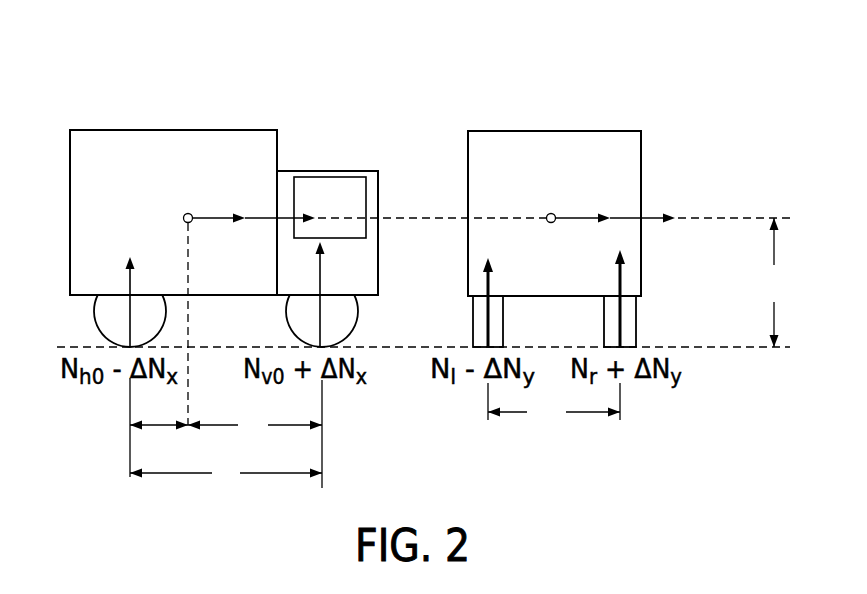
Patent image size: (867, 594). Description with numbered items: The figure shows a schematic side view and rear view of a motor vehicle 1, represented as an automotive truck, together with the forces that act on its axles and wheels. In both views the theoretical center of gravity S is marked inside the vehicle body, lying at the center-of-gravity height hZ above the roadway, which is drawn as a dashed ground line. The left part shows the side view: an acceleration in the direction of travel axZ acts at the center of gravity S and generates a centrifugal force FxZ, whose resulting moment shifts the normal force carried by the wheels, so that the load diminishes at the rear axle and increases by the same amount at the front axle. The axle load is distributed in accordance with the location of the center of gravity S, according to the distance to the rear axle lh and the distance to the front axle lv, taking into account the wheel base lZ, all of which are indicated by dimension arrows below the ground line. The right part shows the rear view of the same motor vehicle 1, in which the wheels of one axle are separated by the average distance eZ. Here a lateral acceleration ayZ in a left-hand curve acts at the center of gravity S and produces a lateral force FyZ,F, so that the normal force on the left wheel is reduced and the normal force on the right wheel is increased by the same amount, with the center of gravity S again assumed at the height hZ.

The motor vehicle 1 is at (228, 145).
The center of gravity S is at (185, 214).
The acceleration in direction of travel axZ is at (218, 200).
The centrifugal force FxZ is at (305, 207).
The lateral acceleration ayZ is at (582, 200).
The lateral force FyZ,F is at (664, 196).
The distance from center of gravity to rear axle lh is at (159, 406).
The distance from center of gravity to front axle lv is at (255, 420).
The wheel base lZ is at (226, 474).
The center-of-gravity height hZ is at (768, 282).
The average wheel distance eZ is at (554, 405).